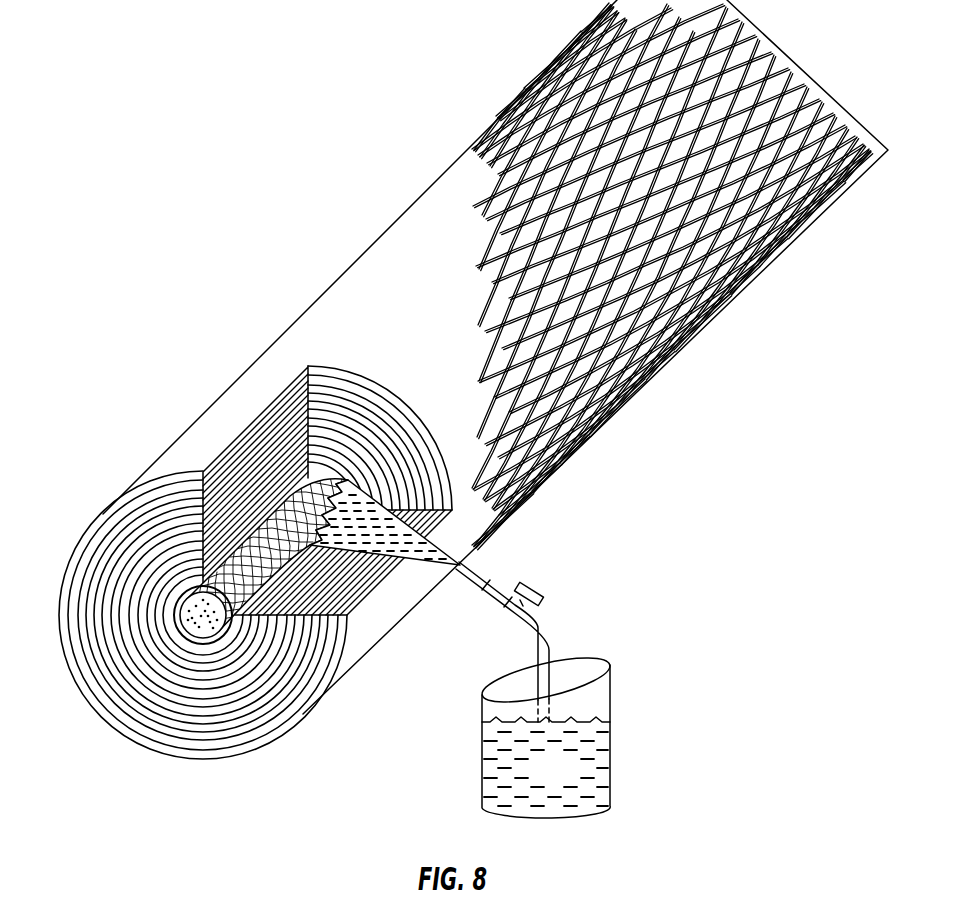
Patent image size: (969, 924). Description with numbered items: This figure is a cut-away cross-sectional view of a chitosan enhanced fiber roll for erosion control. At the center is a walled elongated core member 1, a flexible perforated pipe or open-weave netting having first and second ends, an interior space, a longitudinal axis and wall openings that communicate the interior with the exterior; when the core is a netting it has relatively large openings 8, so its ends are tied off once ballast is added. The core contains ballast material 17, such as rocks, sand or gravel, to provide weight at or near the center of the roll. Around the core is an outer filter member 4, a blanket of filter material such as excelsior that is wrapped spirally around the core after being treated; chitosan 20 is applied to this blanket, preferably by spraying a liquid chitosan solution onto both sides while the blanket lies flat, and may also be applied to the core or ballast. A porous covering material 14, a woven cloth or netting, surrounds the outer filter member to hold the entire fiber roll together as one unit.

The walled elongated core member 1 is at (237, 553).
The outer filter member 4 is at (287, 700).
The openings 8 is at (312, 537).
The porous covering material 14 is at (258, 400).
The ballast material 17 is at (190, 614).
The chitosan 20 is at (560, 779).